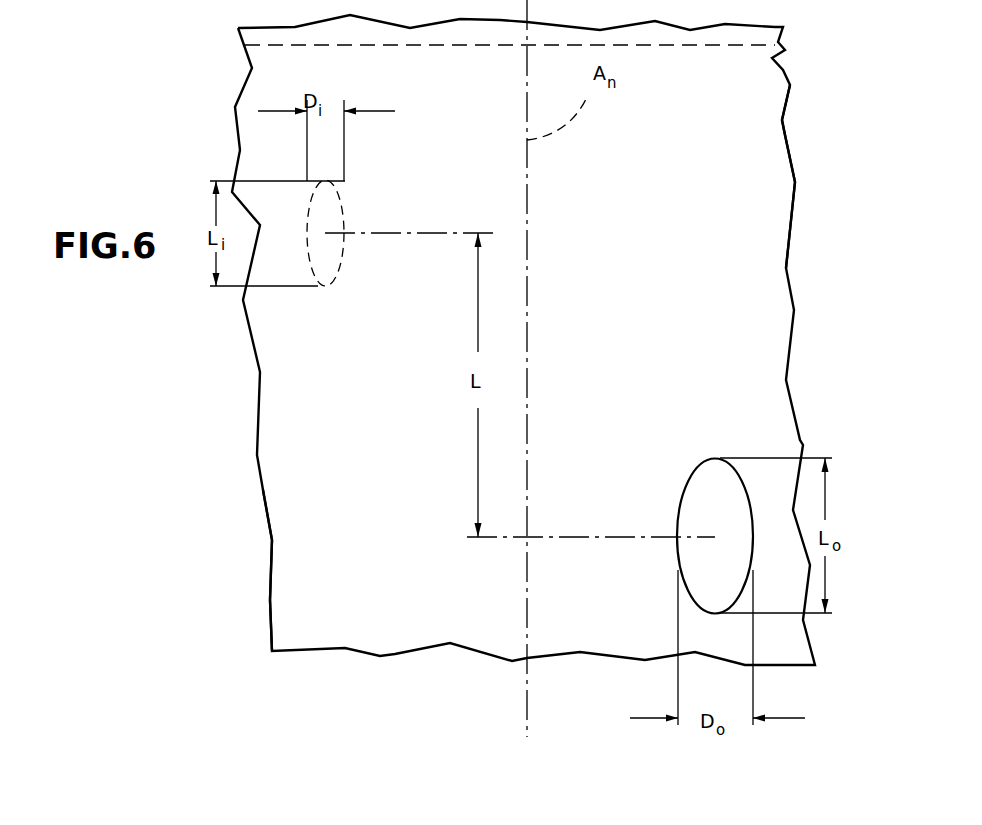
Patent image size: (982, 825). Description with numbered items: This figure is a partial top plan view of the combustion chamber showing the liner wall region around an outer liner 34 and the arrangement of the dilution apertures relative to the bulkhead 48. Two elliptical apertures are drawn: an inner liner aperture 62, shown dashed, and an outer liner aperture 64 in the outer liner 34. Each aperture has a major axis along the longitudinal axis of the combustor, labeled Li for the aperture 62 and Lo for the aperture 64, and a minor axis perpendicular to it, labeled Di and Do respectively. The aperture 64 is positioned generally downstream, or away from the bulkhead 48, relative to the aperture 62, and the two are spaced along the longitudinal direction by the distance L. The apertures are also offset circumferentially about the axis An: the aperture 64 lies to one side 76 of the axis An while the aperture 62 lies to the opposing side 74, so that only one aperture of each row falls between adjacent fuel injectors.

The outer liner 34 is at (580, 382).
The bulkhead 48 is at (730, 47).
The aperture 62 is at (344, 237).
The aperture 64 is at (689, 502).
The opposing side 74 is at (292, 602).
The side 76 is at (770, 182).